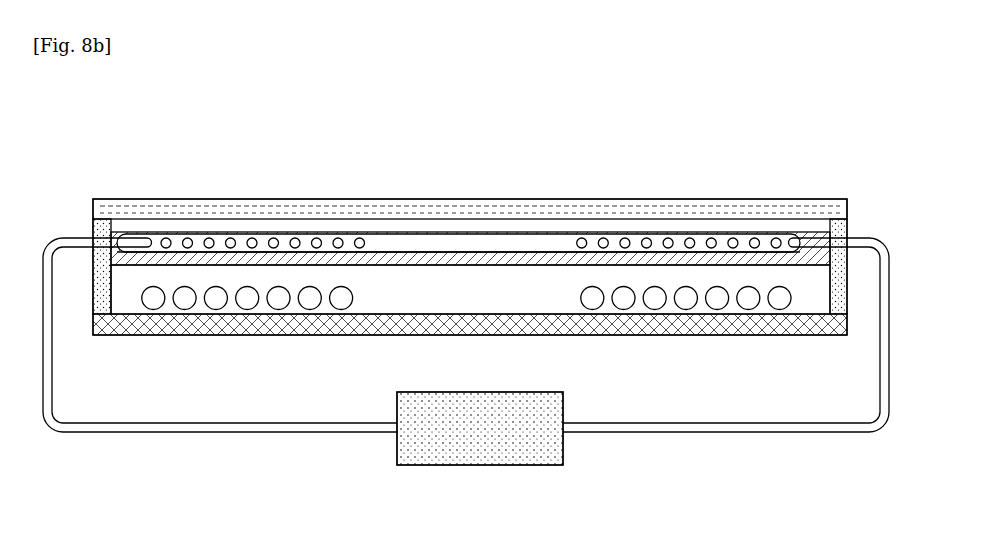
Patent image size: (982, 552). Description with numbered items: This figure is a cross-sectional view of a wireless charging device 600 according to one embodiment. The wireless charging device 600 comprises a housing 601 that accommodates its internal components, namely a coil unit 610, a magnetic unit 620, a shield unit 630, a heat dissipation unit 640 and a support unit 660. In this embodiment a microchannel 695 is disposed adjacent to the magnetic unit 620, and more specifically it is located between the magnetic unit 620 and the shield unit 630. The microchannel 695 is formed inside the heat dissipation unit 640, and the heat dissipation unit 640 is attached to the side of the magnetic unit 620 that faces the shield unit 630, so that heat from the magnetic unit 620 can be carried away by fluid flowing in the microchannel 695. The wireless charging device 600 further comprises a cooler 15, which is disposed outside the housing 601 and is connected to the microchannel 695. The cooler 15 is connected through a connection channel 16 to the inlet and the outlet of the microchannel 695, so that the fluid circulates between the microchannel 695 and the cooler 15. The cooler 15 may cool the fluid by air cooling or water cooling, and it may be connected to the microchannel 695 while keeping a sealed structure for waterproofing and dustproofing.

The wireless charging device 600 is at (491, 107).
The housing 601 is at (100, 222).
The microchannel 695 is at (225, 240).
The heat dissipation unit 640 is at (402, 247).
The shield unit 630 is at (483, 212).
The coil unit 610 is at (247, 300).
The magnetic unit 620 is at (499, 262).
The support unit 660 is at (420, 323).
The connection channel 16 is at (213, 433).
The cooler 15 is at (488, 447).